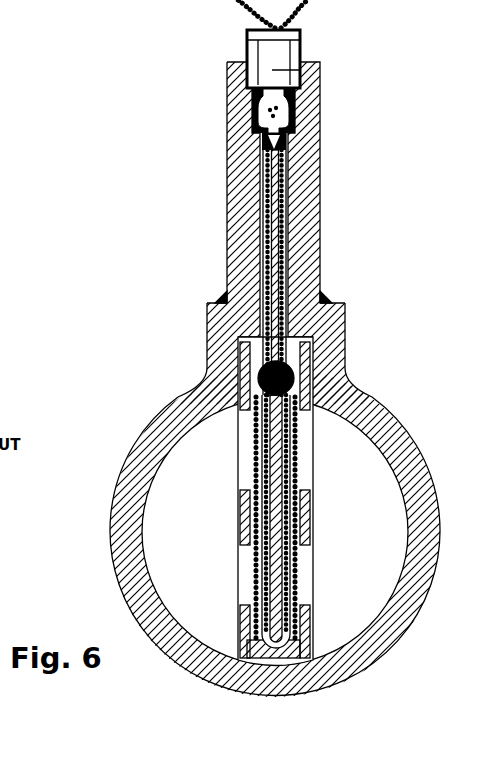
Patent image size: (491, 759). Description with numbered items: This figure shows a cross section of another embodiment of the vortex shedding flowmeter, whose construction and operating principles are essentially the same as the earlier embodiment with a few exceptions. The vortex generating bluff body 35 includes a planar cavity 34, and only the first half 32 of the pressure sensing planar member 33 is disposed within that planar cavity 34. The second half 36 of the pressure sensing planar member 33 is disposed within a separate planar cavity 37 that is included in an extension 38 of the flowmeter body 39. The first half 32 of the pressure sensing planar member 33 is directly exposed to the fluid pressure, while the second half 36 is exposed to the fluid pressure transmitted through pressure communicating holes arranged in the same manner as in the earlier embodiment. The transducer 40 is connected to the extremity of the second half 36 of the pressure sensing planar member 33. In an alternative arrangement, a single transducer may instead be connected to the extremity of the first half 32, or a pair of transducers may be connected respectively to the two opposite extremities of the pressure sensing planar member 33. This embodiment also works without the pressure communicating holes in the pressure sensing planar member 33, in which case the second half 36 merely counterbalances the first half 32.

The first half of the pressure sensing planar member 32 is at (283, 478).
The pressure sensing planar member 33 is at (290, 365).
The planar cavity 34 is at (300, 543).
The vortex generating bluff body 35 is at (245, 550).
The second half of the pressure sensing planar member 36 is at (293, 188).
The planar cavity 37 is at (257, 213).
The extension 38 is at (242, 148).
The flowmeter body 39 is at (155, 432).
The transducer 40 is at (303, 80).